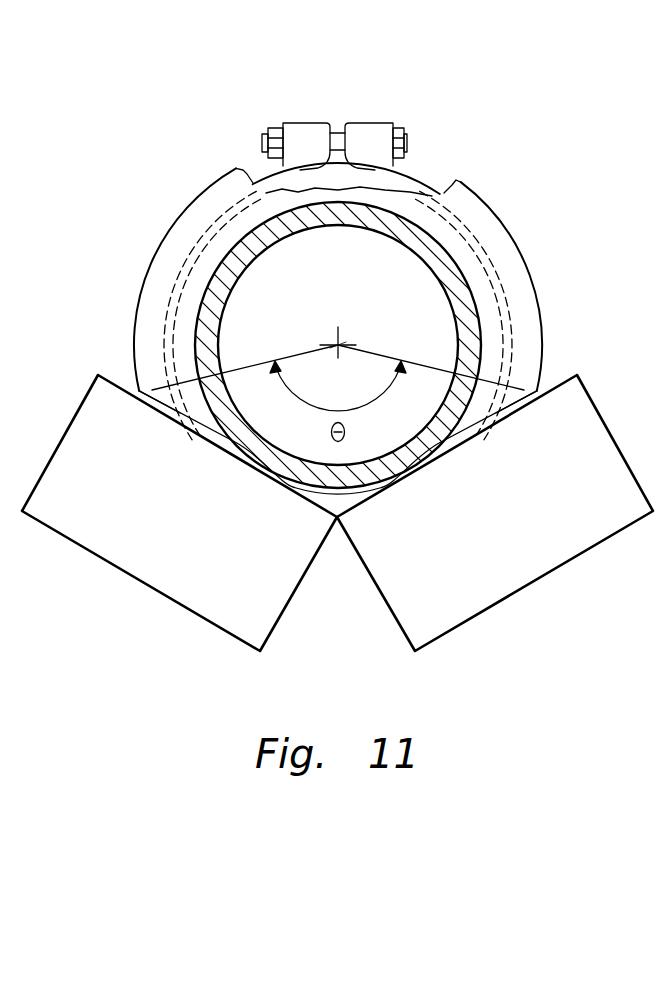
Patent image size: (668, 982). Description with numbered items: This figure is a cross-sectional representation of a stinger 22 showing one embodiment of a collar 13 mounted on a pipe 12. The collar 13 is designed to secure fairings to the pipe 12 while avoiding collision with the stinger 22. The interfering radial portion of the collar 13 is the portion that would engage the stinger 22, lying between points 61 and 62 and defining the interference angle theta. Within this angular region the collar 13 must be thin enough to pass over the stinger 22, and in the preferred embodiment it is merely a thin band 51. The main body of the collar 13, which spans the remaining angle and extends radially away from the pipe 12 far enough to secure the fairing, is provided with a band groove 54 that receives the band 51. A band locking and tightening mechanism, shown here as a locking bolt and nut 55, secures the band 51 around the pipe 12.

The pipe 12 is at (262, 250).
The collar 13 is at (503, 221).
The stinger 22 is at (143, 588).
The band 51 is at (203, 225).
The band groove 54 is at (262, 182).
The locking bolt/nut 55 is at (395, 124).
The point 61 is at (138, 398).
The point 62 is at (538, 396).